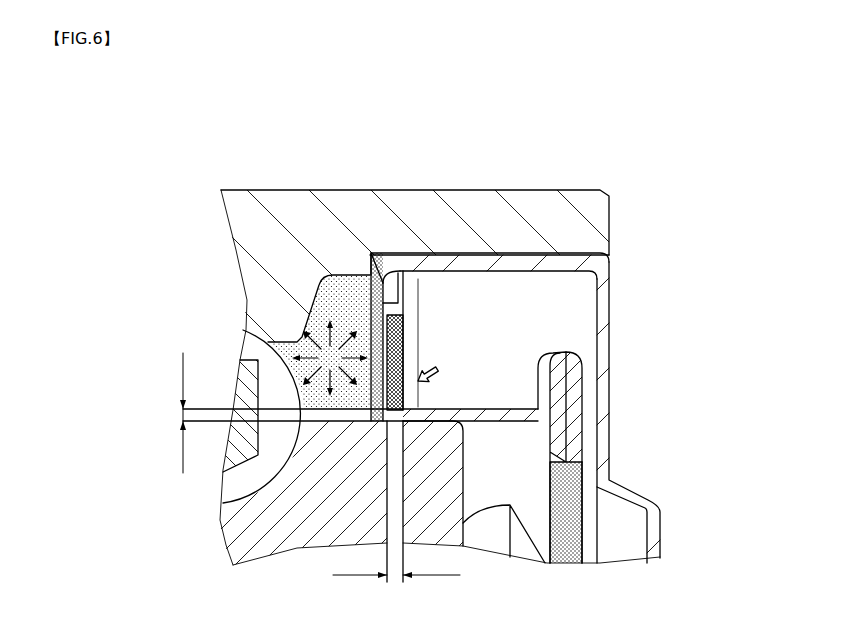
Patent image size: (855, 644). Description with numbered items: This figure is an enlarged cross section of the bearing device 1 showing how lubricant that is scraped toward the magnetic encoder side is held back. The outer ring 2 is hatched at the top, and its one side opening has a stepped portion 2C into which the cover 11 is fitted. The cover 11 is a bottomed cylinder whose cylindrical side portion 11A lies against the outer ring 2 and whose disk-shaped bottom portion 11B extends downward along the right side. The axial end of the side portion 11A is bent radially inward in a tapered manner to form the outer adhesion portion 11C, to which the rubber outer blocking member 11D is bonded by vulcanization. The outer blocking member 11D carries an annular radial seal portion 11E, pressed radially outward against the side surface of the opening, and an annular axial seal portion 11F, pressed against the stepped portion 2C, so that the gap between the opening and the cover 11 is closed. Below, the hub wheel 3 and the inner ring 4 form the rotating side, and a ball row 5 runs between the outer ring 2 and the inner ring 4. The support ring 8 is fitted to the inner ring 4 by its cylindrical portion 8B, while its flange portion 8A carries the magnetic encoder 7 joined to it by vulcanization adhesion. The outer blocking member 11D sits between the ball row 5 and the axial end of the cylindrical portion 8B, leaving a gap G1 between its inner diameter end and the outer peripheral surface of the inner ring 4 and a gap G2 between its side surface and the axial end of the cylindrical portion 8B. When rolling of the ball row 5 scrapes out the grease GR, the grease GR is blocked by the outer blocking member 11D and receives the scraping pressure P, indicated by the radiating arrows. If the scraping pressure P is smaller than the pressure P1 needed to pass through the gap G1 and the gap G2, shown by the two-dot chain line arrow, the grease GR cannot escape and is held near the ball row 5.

The bearing device 1 is at (396, 325).
The outer ring 2 is at (290, 196).
The stepped portion 2C is at (378, 253).
The hub wheel 3 is at (500, 547).
The inner ring 4 is at (257, 553).
The ball row 5 is at (244, 347).
The magnetic encoder 7 is at (566, 565).
The support ring 8 is at (519, 440).
The flange portion 8A is at (555, 356).
The cylindrical portion 8B is at (479, 423).
The cover 11 is at (546, 357).
The side portion 11A is at (517, 257).
The bottom portion 11B is at (612, 356).
The outer adhesion portion 11C is at (421, 285).
The outer blocking member 11D is at (404, 331).
The radial seal portion 11E is at (390, 253).
The axial seal portion 11F is at (368, 268).
The grease GR is at (314, 281).
The scraping pressure P is at (330, 358).
The pressure necessary to pass the gaps P1 is at (437, 374).
The gap with the inner ring G1 is at (169, 413).
The gap with the support ring G2 is at (396, 568).